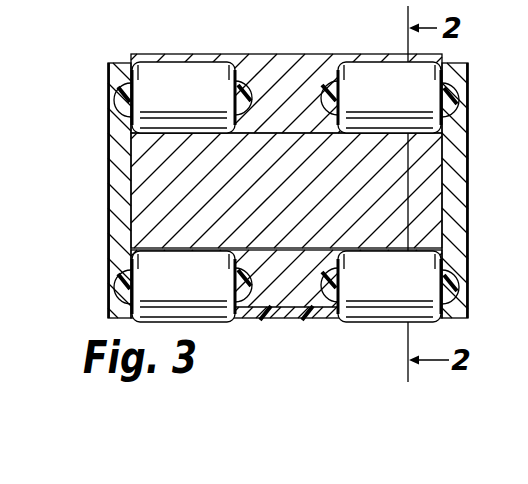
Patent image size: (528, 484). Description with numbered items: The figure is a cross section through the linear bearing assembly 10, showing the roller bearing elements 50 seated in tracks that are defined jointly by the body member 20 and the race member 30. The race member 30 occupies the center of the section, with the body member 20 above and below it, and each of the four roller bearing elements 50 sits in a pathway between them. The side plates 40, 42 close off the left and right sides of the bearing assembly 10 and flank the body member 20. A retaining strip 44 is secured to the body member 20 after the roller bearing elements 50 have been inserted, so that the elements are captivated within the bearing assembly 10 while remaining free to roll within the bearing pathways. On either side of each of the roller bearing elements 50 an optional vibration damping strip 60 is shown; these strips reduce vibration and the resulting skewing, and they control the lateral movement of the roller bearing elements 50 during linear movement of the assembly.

The bearing assembly 10 is at (142, 38).
The body member 20 is at (313, 67).
The race member 30 is at (269, 204).
The side plate 40 is at (108, 192).
The side plate 42 is at (470, 198).
The retaining strip 44 is at (328, 316).
The roller bearing element 50 is at (286, 192).
The vibration damping strip 60 is at (113, 100).